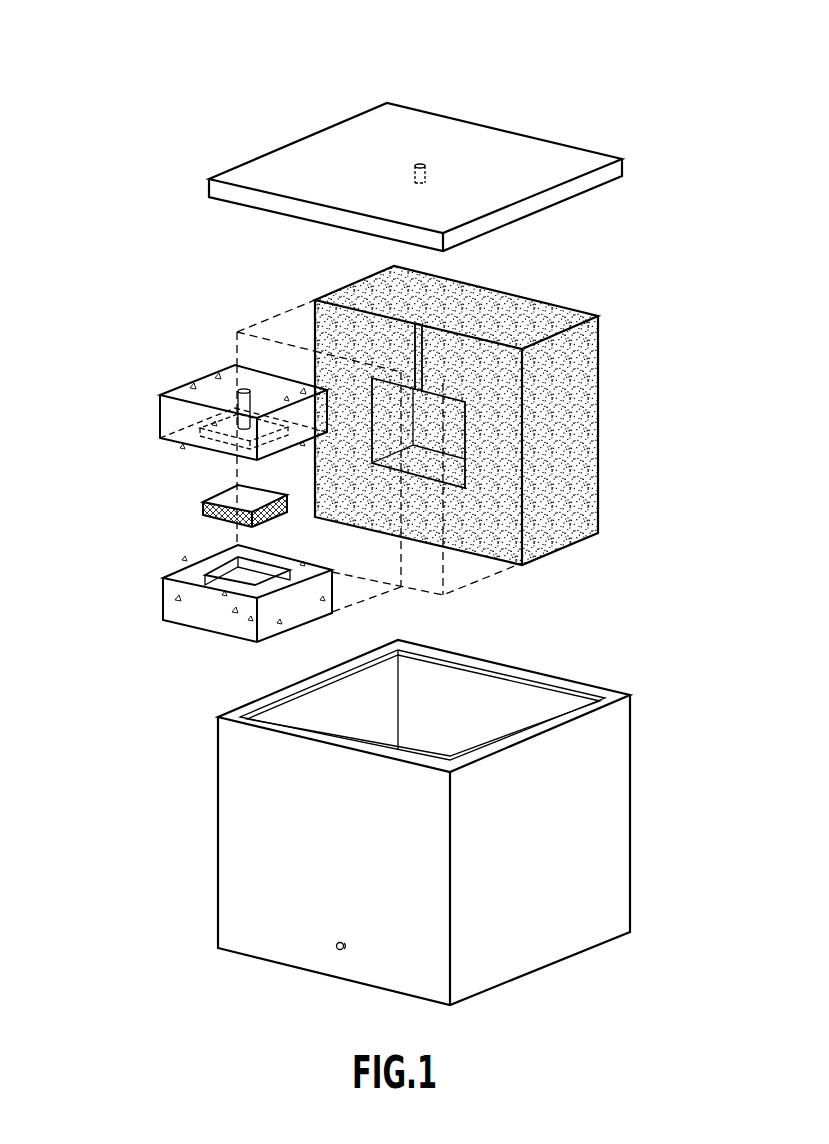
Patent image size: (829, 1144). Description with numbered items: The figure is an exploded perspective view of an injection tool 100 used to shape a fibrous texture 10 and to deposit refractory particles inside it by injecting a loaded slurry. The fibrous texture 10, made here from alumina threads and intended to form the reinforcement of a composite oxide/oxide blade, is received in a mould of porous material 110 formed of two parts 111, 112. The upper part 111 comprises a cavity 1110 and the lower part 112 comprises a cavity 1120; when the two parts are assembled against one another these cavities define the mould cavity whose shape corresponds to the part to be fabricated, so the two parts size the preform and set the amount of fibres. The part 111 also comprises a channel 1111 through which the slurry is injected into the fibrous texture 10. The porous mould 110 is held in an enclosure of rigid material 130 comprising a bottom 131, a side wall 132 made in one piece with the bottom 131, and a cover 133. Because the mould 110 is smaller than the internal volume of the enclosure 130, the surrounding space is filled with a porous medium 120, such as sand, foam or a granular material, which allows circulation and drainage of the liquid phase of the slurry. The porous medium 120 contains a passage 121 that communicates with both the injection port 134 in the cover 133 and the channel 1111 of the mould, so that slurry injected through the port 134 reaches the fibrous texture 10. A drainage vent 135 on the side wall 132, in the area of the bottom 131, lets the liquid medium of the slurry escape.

The injection tool 100 is at (221, 60).
The fibrous texture 10 is at (278, 518).
The mould of porous material 110 is at (108, 402).
The part of porous material mould 111 is at (167, 422).
The cavity 1110 is at (223, 439).
The channel 1111 is at (233, 405).
The part of porous material mould 112 is at (165, 597).
The cavity 1120 is at (263, 577).
The porous medium 120 is at (600, 417).
The passage 121 is at (418, 320).
The enclosure of rigid material 130 is at (713, 310).
The bottom 131 is at (610, 940).
The side wall 132 is at (622, 735).
The cover 133 is at (568, 190).
The injection port 134 is at (420, 163).
The drainage vent 135 is at (332, 948).